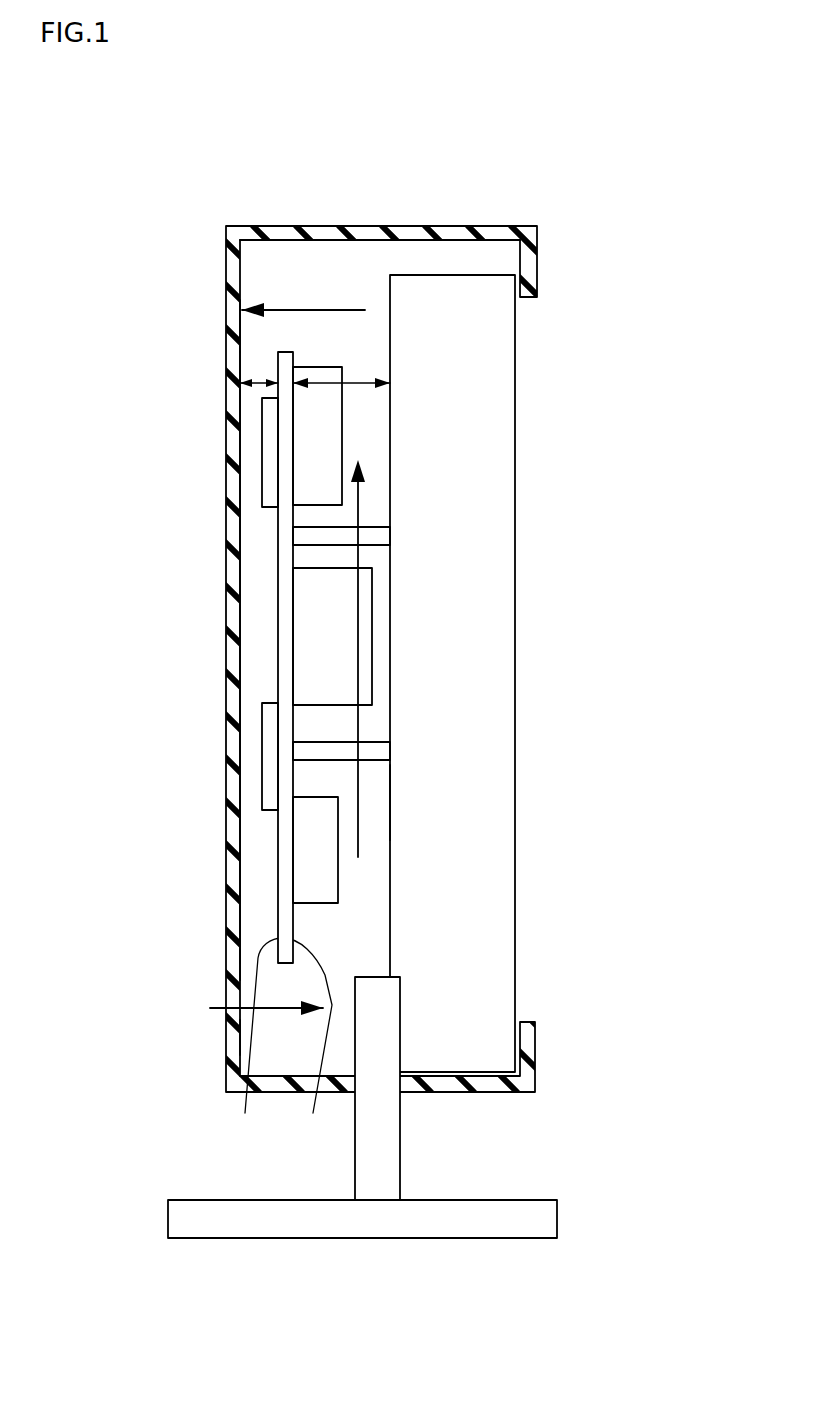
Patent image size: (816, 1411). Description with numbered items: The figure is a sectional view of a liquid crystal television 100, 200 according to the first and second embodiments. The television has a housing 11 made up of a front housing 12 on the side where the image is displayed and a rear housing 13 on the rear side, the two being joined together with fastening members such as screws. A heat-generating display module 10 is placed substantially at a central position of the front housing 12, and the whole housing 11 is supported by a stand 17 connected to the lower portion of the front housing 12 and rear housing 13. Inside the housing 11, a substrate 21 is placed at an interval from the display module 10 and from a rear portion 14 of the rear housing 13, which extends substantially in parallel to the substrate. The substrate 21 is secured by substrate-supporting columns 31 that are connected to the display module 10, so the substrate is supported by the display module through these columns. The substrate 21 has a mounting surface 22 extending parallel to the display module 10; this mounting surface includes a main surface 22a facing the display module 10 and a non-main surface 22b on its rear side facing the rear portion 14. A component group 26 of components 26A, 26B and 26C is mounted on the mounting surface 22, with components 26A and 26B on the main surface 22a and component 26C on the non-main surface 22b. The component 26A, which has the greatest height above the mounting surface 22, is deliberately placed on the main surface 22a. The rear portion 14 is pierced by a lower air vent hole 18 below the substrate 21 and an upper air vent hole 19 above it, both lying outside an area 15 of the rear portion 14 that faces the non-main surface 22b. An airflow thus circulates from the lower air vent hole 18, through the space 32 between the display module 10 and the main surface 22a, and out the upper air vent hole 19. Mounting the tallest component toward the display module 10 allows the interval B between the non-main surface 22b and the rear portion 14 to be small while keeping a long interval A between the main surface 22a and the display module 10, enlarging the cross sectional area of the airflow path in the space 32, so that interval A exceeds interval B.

The liquid crystal television 100 is at (250, 110).
The liquid crystal television 200 is at (408, 690).
The housing 11 is at (420, 161).
The front housing 12 is at (418, 227).
The rear housing 13 is at (327, 226).
The display module 10 is at (477, 605).
The upper air vent hole 19 is at (240, 340).
The area 15 is at (212, 352).
The rear portion 14 is at (232, 962).
The lower air vent hole 18 is at (236, 1036).
The substrate 21 is at (287, 925).
The component group 26 is at (650, 393).
The component 26A is at (340, 617).
The component 26B is at (323, 405).
The component 26C is at (272, 445).
The substrate-supporting column 31 is at (375, 537).
The space 32 is at (373, 802).
The mounting surface 22 is at (342, 1152).
The main surface 22a is at (313, 1113).
The non-main surface 22b is at (245, 1113).
The stand 17 is at (387, 1150).
The interval A is at (353, 382).
The interval B is at (238, 380).